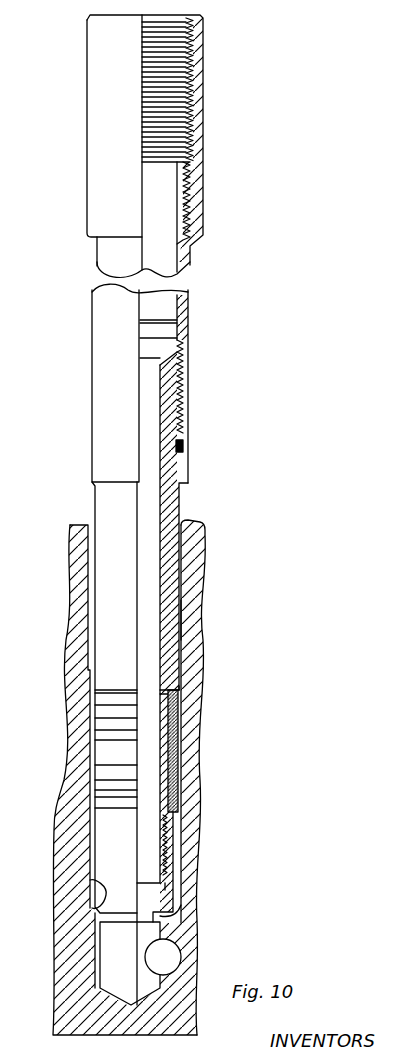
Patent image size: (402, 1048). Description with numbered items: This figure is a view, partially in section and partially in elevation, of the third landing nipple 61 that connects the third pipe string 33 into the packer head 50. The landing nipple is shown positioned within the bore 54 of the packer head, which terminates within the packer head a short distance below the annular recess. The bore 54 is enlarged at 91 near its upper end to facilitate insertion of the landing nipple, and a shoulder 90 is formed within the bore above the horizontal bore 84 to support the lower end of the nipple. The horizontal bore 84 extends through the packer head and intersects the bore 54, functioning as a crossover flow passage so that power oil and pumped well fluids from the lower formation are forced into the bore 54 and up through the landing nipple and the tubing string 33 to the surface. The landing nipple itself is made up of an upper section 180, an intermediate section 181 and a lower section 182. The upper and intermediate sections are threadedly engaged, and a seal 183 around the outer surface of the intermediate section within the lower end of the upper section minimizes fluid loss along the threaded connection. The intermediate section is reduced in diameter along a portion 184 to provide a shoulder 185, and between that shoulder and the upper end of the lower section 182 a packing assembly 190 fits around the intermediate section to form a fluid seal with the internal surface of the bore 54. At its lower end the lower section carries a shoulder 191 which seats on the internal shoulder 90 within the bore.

The third pipe string 33 is at (87, 31).
The landing nipple 61 is at (92, 367).
The upper section 180 is at (189, 327).
The seal 183 is at (184, 449).
The intermediate section 181 is at (181, 497).
The bore 54 is at (190, 530).
The enlargement of bore 91 is at (176, 617).
The reduced diameter portion 184 is at (180, 689).
The shoulder 185 is at (165, 697).
The packing assembly 190 is at (176, 760).
The lower section 182 is at (169, 840).
The packer head 50 is at (63, 852).
The shoulder 90 is at (90, 880).
The shoulder 191 is at (182, 917).
The horizontal bore 84 is at (178, 955).